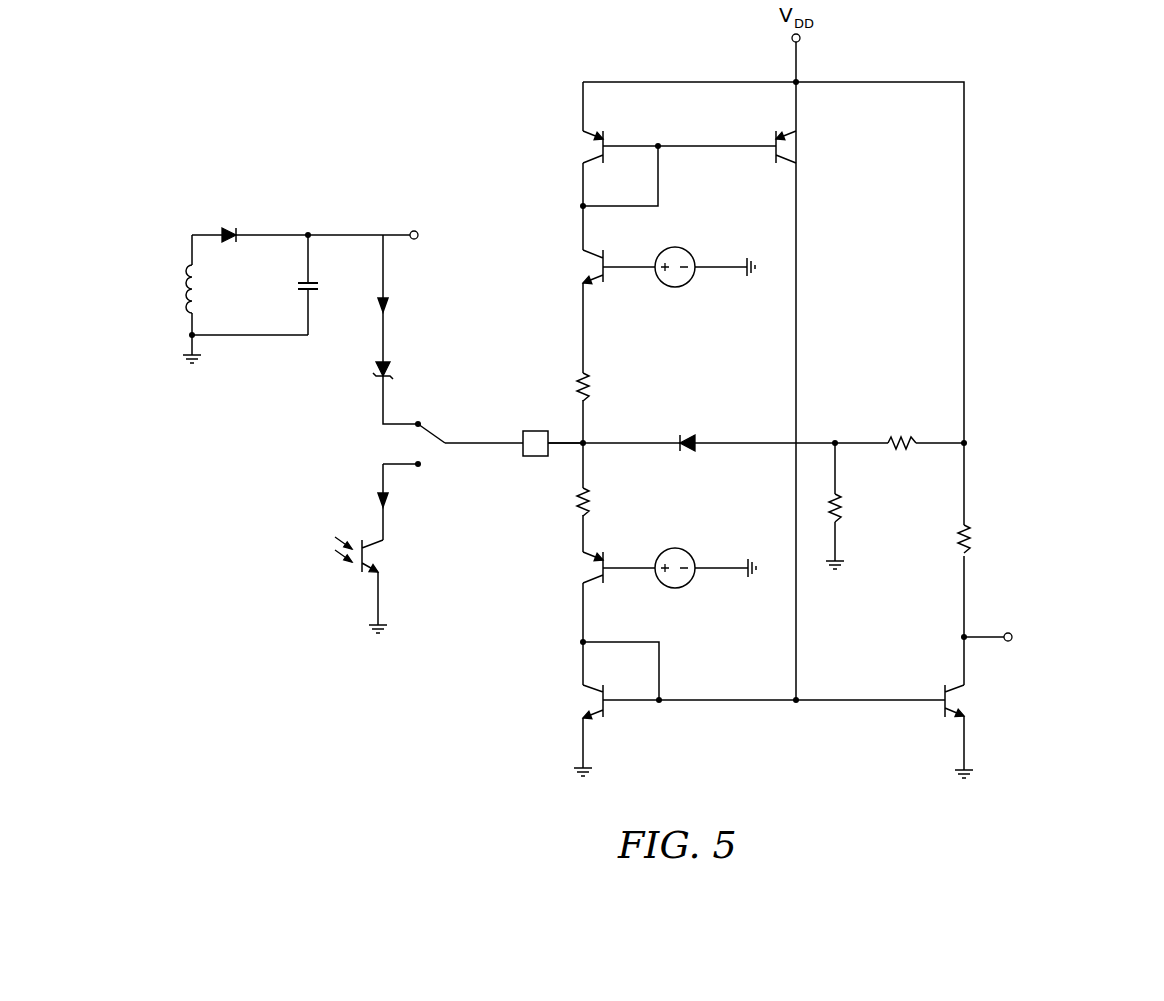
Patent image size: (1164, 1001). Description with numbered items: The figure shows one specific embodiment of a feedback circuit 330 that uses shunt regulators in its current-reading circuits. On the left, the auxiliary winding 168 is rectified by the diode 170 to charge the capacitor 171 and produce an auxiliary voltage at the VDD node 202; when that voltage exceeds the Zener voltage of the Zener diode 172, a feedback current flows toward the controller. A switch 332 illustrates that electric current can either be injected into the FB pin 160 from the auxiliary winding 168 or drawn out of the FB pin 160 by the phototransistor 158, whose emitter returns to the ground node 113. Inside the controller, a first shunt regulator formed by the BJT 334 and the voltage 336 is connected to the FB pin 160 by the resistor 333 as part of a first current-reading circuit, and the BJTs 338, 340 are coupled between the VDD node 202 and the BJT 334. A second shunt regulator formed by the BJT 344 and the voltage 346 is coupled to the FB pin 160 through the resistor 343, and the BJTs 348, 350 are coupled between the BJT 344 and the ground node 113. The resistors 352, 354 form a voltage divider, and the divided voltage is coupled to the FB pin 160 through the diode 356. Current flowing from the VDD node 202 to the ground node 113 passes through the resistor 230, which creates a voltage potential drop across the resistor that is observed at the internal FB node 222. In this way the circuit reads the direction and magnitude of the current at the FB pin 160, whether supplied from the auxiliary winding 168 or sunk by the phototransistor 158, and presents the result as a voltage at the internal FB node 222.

The ground node 113 is at (200, 360).
The phototransistor 158 is at (370, 568).
The FB node 160 is at (532, 430).
The auxiliary winding 168 is at (188, 290).
The diode 170 is at (227, 226).
The capacitor 171 is at (297, 288).
The Zener diode 172 is at (392, 372).
The VDD node 202 is at (414, 231).
The internal FB node 222 is at (1012, 633).
The resistor 230 is at (970, 542).
The feedback circuit 330 is at (1092, 96).
The switch 332 is at (440, 436).
The resistor 333 is at (590, 390).
The BJT 334 is at (607, 272).
The voltage 336 is at (676, 288).
The BJT 338 is at (606, 137).
The BJT 340 is at (772, 137).
The resistor 343 is at (590, 504).
The BJT 344 is at (607, 578).
The voltage 346 is at (676, 589).
The BJT 348 is at (607, 712).
The BJT 350 is at (942, 692).
The resistor 352 is at (903, 440).
The resistor 354 is at (842, 508).
The diode 356 is at (690, 435).